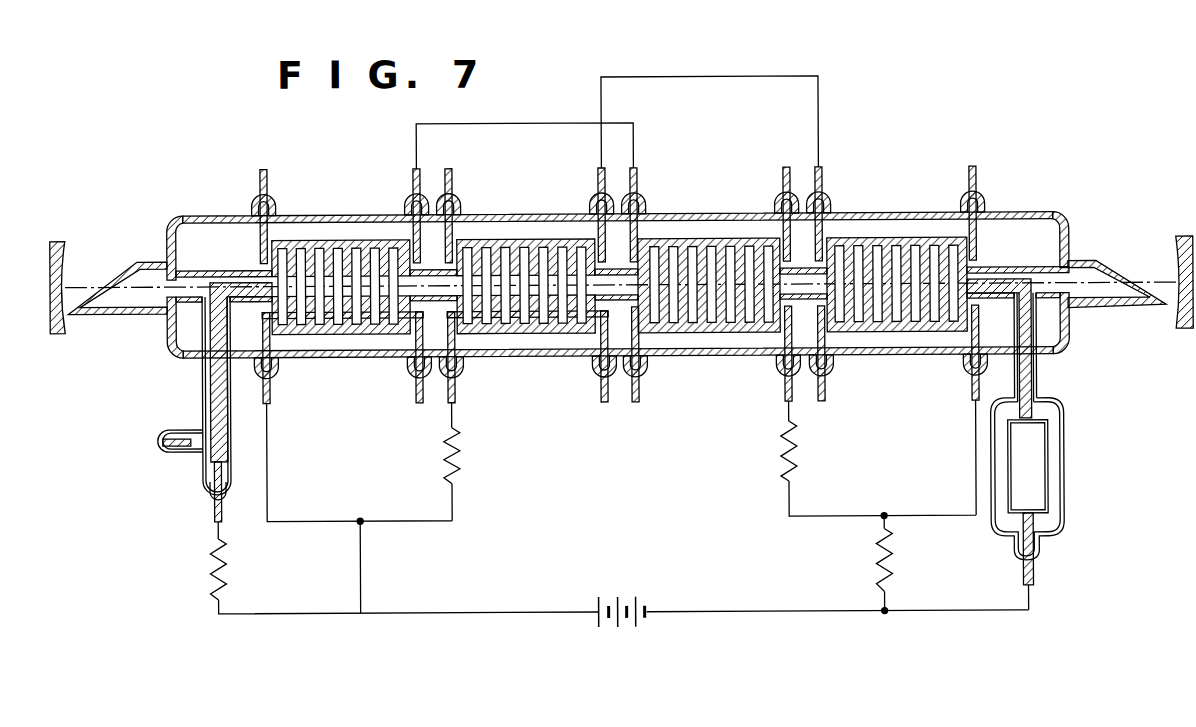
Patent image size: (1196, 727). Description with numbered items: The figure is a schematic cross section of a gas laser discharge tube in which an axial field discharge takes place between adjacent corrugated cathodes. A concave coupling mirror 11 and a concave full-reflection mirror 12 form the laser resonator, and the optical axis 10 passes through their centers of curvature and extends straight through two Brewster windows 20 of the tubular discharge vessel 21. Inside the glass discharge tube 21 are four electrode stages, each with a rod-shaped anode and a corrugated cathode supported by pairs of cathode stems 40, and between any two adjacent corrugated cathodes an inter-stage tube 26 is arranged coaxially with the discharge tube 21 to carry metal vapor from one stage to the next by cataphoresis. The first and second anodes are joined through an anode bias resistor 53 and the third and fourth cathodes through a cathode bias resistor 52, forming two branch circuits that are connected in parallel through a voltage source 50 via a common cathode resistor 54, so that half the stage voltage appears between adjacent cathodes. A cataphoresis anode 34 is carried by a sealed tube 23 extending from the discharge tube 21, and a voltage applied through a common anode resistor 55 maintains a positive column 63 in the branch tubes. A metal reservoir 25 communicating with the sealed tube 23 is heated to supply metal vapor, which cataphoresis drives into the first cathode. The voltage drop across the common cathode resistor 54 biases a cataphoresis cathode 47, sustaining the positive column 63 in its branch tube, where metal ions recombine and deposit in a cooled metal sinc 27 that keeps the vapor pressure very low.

The optical axis 10 is at (78, 285).
The concave coupling mirror 11 is at (64, 239).
The concave full-reflection mirror 12 is at (1179, 237).
The Brewster window 20 is at (123, 272).
The tubular discharge vessel 21 is at (758, 213).
The sealed tube 23 is at (202, 381).
The metal reservoir 25 is at (178, 447).
The inter-stage tube 26 is at (438, 257).
The metal sinc 27 is at (991, 418).
The cataphoresis anode 34 is at (210, 490).
The cathode stem 40 is at (269, 182).
The cataphoresis cathode 47 is at (1007, 470).
The voltage source 50 is at (622, 629).
The cathode bias resistor 52 is at (778, 454).
The anode bias resistor 53 is at (458, 458).
The common cathode resistor 54 is at (894, 567).
The common anode resistor 55 is at (226, 572).
The positive column 63 is at (228, 429).